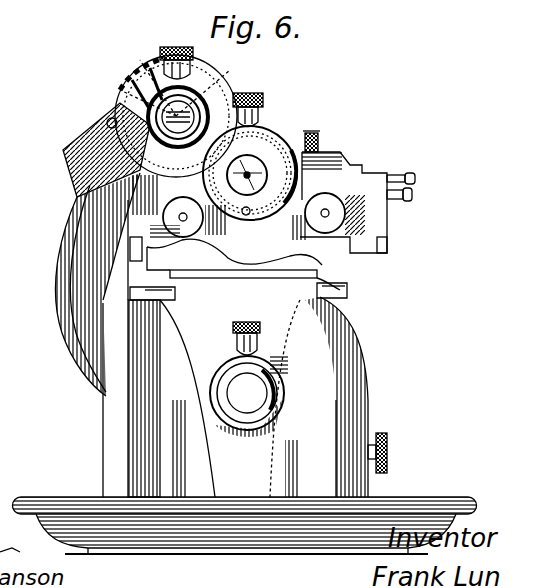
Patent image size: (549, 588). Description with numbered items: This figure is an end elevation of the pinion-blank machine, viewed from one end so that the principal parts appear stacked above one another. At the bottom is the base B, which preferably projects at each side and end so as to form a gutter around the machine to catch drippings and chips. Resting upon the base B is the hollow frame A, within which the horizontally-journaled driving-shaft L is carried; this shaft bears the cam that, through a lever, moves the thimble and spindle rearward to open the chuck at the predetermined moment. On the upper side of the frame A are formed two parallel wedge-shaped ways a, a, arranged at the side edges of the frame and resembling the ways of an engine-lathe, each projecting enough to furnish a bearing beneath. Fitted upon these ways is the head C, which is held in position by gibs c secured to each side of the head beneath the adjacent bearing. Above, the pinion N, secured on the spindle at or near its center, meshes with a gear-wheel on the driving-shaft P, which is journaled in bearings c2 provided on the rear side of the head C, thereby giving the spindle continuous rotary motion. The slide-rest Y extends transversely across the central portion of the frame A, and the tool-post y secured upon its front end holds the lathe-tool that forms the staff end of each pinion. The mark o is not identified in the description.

The hollow frame A is at (245, 348).
The base B is at (245, 515).
The head C is at (243, 264).
The driving-shaft L is at (222, 412).
The pinion N is at (274, 134).
The driving-shaft P is at (225, 79).
The slide-rest Y is at (357, 202).
The tool-post y is at (340, 170).
The ways a is at (218, 262).
The gib c is at (352, 281).
The bearing c2 is at (106, 148).
The cam teeth o is at (142, 86).